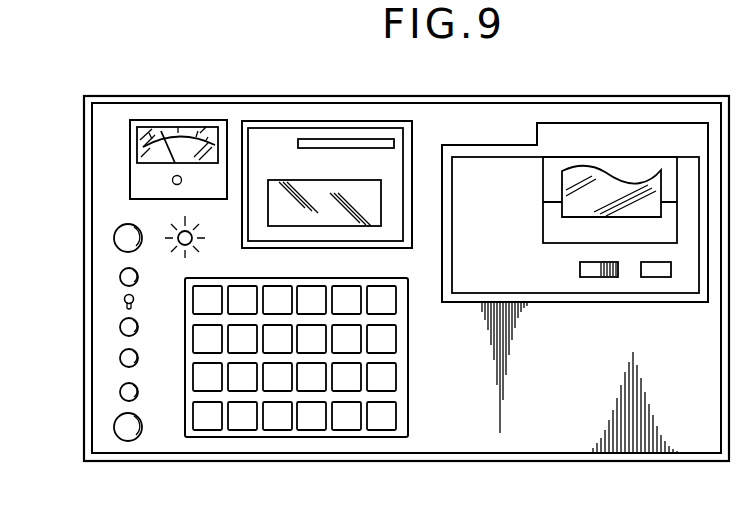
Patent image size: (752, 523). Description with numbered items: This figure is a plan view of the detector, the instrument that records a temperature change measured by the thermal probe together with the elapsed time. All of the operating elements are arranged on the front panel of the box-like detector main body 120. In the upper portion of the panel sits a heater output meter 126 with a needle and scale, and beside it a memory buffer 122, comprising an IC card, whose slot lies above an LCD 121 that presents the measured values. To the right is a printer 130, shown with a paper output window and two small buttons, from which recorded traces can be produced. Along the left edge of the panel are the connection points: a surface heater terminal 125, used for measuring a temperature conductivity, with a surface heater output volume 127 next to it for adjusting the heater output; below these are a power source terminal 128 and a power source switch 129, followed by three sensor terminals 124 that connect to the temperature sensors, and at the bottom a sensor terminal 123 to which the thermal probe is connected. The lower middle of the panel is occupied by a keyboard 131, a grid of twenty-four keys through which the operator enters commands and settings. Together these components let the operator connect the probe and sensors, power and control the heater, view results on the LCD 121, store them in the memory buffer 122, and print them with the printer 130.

The detector main body 120 is at (514, 94).
The LCD 121 is at (316, 180).
The memory buffer 122 is at (394, 143).
The sensor terminal 123 is at (128, 441).
The sensor terminals 124 is at (120, 330).
The surface heater terminal 125 is at (114, 236).
The heater output meter 126 is at (188, 120).
The surface heater output volume 127 is at (192, 243).
The power source terminal 128 is at (120, 278).
The power source switch 129 is at (125, 304).
The printer 130 is at (614, 156).
The keyboard 131 is at (408, 350).